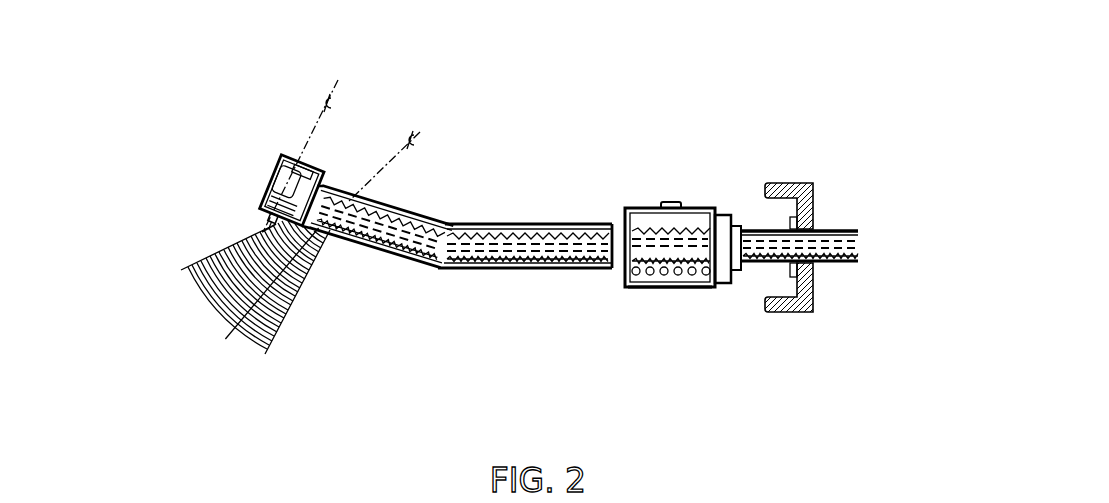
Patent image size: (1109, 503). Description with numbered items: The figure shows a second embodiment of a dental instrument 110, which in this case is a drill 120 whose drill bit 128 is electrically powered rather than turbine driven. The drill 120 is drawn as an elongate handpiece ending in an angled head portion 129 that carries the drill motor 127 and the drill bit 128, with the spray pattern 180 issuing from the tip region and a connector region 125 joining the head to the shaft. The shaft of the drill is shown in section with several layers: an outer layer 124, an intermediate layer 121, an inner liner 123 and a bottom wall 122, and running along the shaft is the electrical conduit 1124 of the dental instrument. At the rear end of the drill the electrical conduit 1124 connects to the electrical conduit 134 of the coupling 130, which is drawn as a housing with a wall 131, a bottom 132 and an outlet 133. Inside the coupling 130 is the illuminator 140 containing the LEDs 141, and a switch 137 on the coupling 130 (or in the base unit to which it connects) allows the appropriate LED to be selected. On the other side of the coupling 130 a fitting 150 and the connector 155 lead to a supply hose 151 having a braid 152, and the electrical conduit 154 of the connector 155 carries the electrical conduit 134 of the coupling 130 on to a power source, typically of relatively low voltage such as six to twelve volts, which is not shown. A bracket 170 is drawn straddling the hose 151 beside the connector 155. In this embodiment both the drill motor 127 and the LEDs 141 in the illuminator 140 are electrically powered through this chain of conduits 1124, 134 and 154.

The dental instrument 110 is at (637, 87).
The drill 120 is at (537, 162).
The nozzle head 129 is at (281, 147).
The drill motor 127 is at (264, 223).
The drill bit 128 is at (267, 238).
The pipe connector 125 is at (333, 240).
The outer pipe layer 124 is at (481, 222).
The electrical conduit 1124 is at (418, 225).
The reinforcing layer 121 is at (586, 222).
The inner liner 123 is at (448, 270).
The pipe bottom wall 122 is at (508, 270).
The spray pattern 180 is at (291, 313).
The coupling 130 is at (690, 304).
The electrical conduit 134 is at (640, 222).
The switch 137 is at (666, 201).
The filter element 131 is at (684, 228).
The illuminator 140 is at (672, 292).
The housing bottom 132 is at (620, 272).
The LEDs 141 is at (652, 285).
The housing outlet 133 is at (708, 288).
The connector 155 is at (728, 218).
The fitting 150 is at (744, 226).
The mounting bracket 170 is at (795, 184).
The supply hose 151 is at (836, 228).
The hose braid 152 is at (857, 254).
The electrical conduit 154 is at (866, 264).